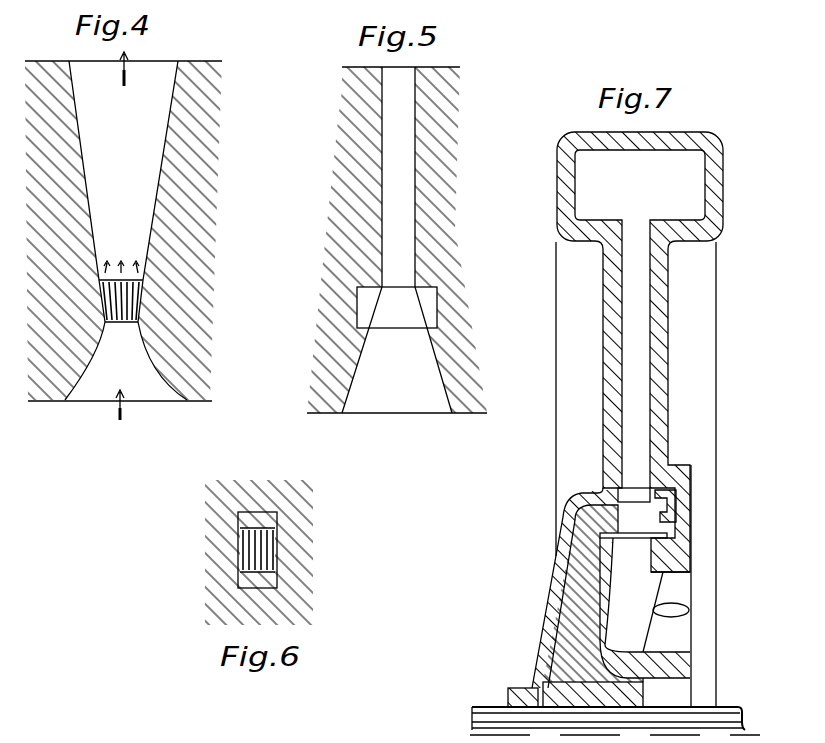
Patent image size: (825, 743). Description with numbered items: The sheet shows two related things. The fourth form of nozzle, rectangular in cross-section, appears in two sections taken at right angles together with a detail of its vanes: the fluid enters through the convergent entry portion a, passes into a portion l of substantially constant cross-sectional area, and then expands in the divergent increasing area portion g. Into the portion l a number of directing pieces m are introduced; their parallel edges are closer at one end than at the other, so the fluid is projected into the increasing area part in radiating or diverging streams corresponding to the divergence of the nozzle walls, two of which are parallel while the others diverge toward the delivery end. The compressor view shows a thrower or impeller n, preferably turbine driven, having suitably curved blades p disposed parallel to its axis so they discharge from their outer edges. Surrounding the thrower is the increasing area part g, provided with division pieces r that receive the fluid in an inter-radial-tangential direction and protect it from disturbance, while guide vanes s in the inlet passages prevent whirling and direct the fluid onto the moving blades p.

In FIG. 4, the increasing area portion g is at (121, 162).
In FIG. 5, the increasing area portion g is at (390, 99).
In FIG. 7, the increasing area portion g is at (640, 302).
In FIG. 4, the portion of substantially constant cross sectional area l is at (140, 297).
In FIG. 5, the portion of substantially constant cross sectional area l is at (360, 300).
In FIG. 6, the portion of substantially constant cross sectional area l is at (258, 550).
In FIG. 4, the directing pieces m is at (112, 297).
In FIG. 5, the directing pieces m is at (382, 318).
In FIG. 6, the directing pieces m is at (268, 552).
In FIG. 4, the entry portion a is at (126, 381).
In FIG. 5, the entry portion a is at (419, 394).
In FIG. 7, the division pieces r is at (632, 395).
In FIG. 7, the guide vanes s is at (631, 548).
In FIG. 7, the blades p is at (637, 521).
In FIG. 7, the thrower or impeller n is at (633, 697).